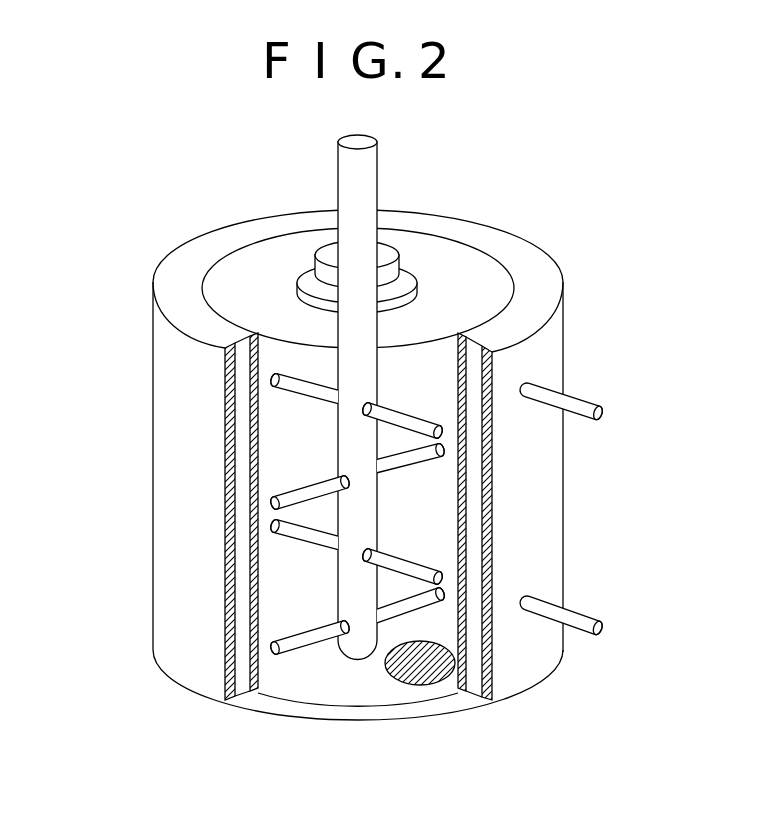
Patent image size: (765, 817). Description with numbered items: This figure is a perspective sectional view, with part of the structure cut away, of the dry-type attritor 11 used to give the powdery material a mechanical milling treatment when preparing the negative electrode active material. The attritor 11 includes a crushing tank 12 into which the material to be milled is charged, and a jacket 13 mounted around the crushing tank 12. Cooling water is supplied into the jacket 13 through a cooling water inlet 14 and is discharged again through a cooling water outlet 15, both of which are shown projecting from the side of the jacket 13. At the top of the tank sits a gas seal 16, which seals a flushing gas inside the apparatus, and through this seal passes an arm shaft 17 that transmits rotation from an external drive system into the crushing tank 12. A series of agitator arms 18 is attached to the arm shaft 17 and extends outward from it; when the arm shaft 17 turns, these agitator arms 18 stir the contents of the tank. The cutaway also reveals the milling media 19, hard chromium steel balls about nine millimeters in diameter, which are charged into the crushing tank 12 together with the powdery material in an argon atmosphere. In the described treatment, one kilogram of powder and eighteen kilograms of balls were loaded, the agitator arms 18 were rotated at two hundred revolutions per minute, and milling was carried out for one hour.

The attritor 11 is at (358, 457).
The crushing tank 12 is at (443, 249).
The jacket 13 is at (545, 281).
The cooling water inlet 14 is at (583, 613).
The cooling water outlet 15 is at (582, 398).
The gas seal 16 is at (325, 273).
The arm shaft 17 is at (350, 650).
The agitator arms 18 is at (292, 650).
The milling media 19 is at (420, 682).